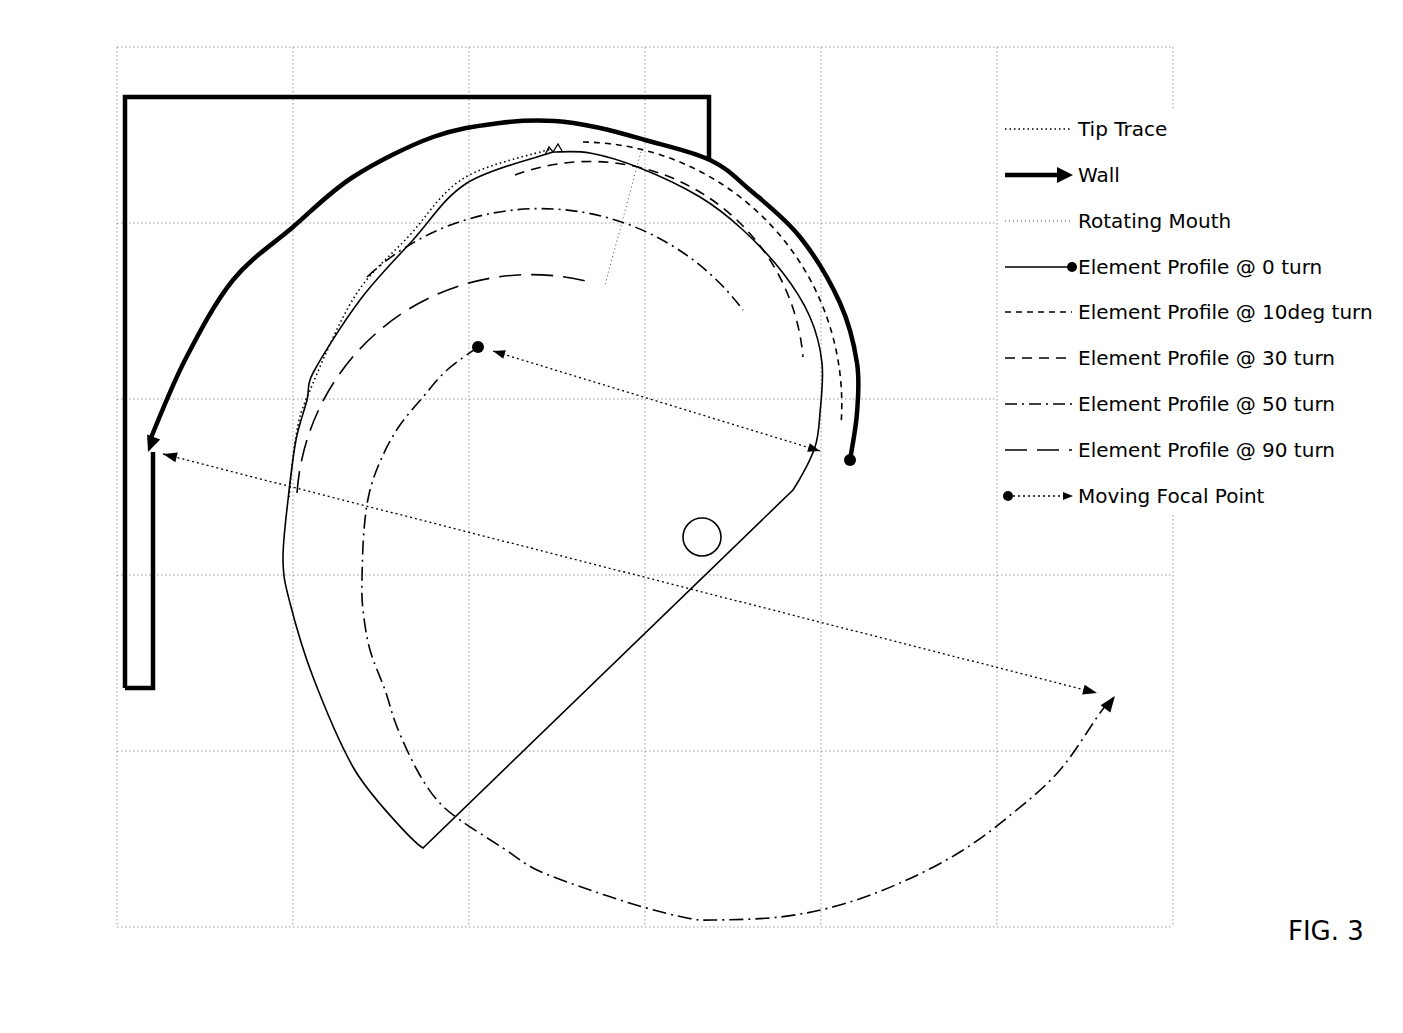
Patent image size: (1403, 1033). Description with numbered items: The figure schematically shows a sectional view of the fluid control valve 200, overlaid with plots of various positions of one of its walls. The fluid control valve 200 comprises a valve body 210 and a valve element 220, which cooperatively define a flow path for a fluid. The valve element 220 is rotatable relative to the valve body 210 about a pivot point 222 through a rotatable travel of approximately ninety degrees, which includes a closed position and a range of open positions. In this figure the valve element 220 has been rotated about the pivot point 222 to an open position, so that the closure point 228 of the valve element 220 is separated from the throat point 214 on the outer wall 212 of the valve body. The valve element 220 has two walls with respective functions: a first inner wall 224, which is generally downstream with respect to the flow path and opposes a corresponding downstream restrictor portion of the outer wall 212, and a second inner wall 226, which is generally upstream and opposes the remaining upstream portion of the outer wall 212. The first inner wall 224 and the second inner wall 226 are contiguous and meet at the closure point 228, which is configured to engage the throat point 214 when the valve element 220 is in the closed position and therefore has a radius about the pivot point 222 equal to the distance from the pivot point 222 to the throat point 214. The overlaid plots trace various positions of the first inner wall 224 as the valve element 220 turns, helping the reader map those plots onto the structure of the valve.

The fluid control valve 200 is at (222, 84).
The valve body 210 is at (192, 151).
The outer wall 212 is at (256, 268).
The throat point 214 is at (650, 132).
The valve element 220 is at (542, 710).
The pivot point 222 is at (751, 545).
The first inner wall 224 is at (763, 246).
The second inner wall 226 is at (318, 372).
The closure point 228 is at (550, 146).